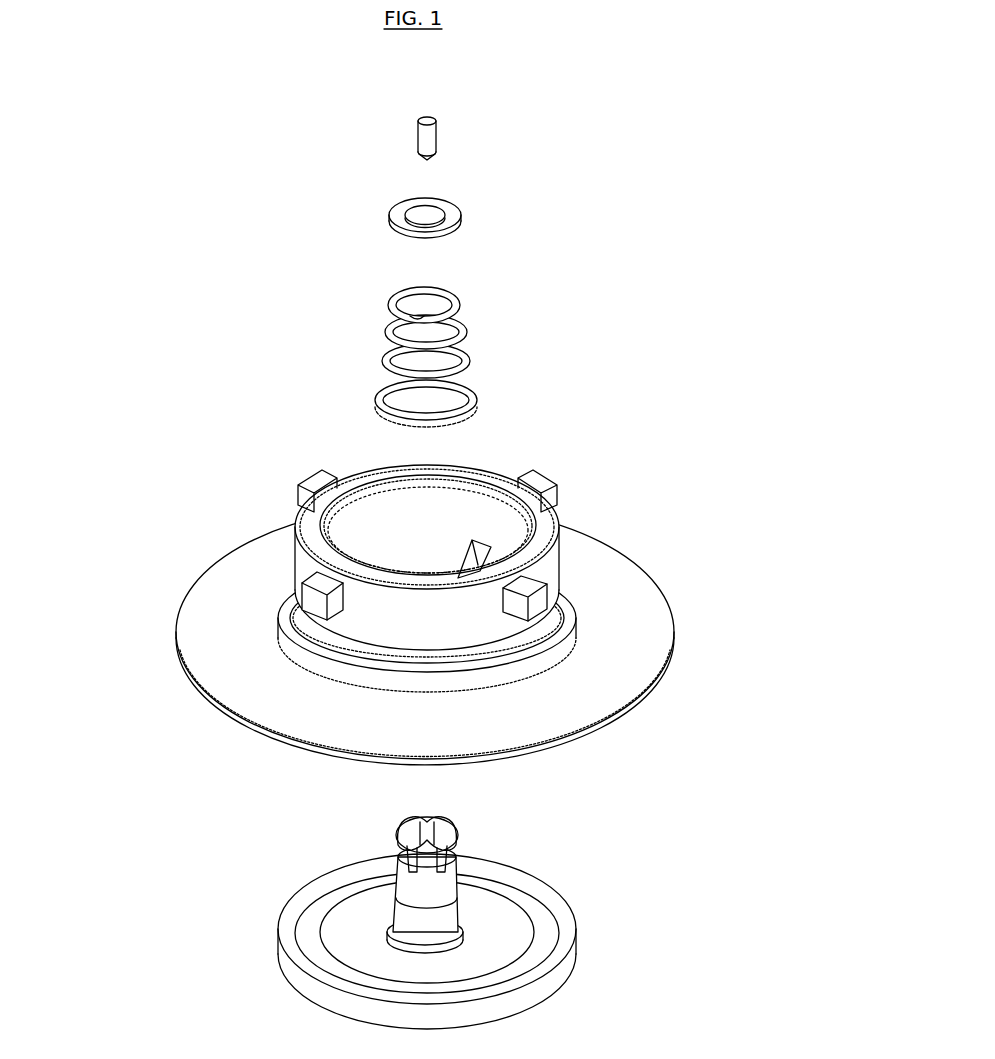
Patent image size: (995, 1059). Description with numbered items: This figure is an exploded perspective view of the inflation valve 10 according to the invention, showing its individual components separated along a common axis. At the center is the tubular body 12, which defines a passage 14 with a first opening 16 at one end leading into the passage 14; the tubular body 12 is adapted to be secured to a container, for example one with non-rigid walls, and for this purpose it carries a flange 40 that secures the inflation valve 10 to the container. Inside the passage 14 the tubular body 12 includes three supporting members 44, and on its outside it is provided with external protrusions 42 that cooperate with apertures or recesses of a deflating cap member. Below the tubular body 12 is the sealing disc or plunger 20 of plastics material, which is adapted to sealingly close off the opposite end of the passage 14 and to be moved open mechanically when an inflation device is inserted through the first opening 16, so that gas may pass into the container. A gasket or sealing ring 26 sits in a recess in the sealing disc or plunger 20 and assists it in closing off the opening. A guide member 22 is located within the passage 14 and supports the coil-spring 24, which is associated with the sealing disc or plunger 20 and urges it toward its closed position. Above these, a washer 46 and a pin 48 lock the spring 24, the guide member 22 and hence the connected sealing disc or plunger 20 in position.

The inflation valve 10 is at (67, 20).
The tubular body 12 is at (548, 552).
The passage 14 is at (462, 538).
The first opening 16 is at (398, 500).
The sealing disc or plunger 20 is at (568, 965).
The guide member 22 is at (437, 886).
The coil-spring 24 is at (463, 361).
The gasket or sealing ring 26 is at (544, 931).
The flange 40 is at (227, 658).
The external protrusions 42 is at (543, 605).
The supporting members 44 is at (473, 562).
The washer 46 is at (453, 216).
The pin 48 is at (434, 133).